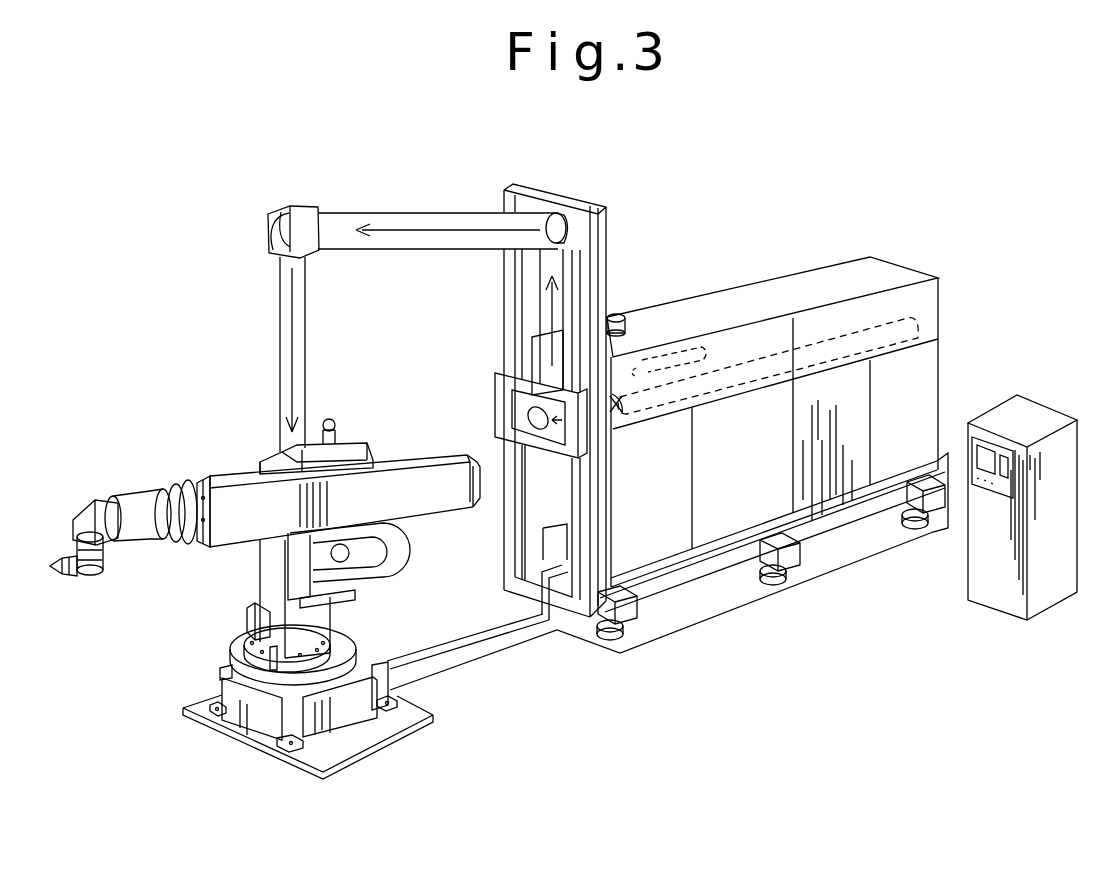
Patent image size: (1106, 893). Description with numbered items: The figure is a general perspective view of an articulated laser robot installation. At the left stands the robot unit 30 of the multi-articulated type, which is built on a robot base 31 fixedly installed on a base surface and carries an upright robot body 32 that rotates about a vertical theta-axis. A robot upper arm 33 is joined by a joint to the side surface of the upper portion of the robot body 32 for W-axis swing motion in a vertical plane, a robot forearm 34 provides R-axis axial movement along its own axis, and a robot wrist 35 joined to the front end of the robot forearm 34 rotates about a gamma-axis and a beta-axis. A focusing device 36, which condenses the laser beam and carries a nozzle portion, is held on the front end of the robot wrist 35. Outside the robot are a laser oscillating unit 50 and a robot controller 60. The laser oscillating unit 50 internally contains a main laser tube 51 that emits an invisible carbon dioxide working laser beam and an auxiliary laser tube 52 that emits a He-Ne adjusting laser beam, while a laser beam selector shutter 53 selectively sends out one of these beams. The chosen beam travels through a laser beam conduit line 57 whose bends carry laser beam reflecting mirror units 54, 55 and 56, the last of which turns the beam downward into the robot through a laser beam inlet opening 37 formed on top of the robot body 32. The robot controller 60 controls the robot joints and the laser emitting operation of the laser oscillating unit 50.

The robot unit 30 is at (398, 444).
The robot base 31 is at (370, 737).
The robot body 32 is at (256, 597).
The robot upper arm 33 is at (427, 502).
The robot forearm 34 is at (183, 486).
The robot wrist 35 is at (116, 502).
The focusing device 36 is at (79, 573).
The laser beam inlet opening 37 is at (276, 460).
The laser oscillating unit 50 is at (765, 277).
The main laser tube 51 is at (715, 390).
The auxiliary laser tube 52 is at (660, 346).
The laser beam selector shutter 53 is at (618, 416).
The laser beam reflecting mirror unit 54 is at (541, 445).
The laser beam reflecting mirror unit 55 is at (600, 233).
The laser beam reflecting mirror unit 56 is at (273, 232).
The laser beam conduit line 57 is at (441, 250).
The robot controller 60 is at (996, 600).